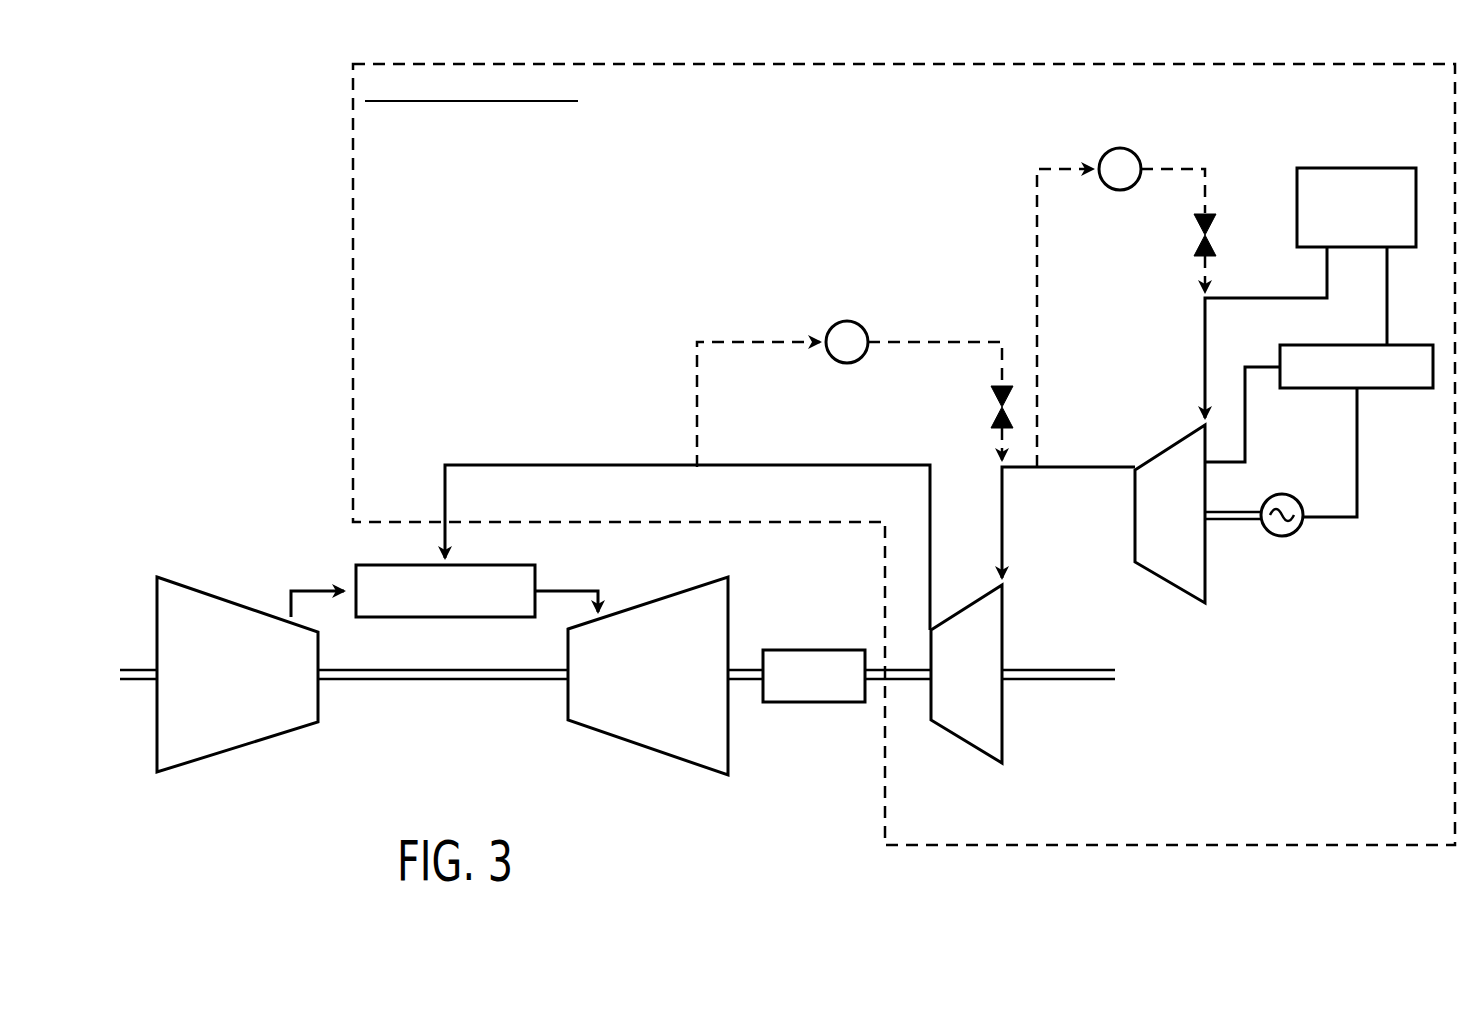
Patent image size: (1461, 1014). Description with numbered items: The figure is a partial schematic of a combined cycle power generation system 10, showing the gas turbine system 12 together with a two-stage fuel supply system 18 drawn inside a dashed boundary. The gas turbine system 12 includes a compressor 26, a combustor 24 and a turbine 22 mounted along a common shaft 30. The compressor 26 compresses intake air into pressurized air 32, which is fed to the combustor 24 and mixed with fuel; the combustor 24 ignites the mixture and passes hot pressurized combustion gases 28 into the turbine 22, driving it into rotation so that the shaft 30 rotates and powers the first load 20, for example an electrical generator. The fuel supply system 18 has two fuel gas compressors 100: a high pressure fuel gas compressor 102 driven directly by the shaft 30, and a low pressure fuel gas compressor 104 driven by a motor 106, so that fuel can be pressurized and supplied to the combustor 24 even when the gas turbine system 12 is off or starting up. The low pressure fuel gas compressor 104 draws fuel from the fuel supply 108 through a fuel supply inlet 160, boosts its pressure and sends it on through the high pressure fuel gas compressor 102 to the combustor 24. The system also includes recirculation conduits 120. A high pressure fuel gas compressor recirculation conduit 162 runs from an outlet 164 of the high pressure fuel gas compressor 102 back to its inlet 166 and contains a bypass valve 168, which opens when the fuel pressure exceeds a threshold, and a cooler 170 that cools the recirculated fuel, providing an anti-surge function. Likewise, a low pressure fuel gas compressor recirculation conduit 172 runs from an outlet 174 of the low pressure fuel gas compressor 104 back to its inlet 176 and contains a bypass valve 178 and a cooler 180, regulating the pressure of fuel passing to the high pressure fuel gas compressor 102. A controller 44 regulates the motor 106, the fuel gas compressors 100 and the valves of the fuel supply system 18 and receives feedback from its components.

The combined cycle power generation system 10 is at (214, 332).
The gas turbine system 12 is at (244, 458).
The fuel supply system 18 is at (353, 293).
The first load 20 is at (818, 650).
The turbine 22 is at (648, 748).
The combustor 24 is at (480, 564).
The compressor 26 is at (235, 750).
The combustion gases 28 is at (565, 590).
The shaft 30 is at (445, 681).
The pressurized air 32 is at (312, 585).
The controller 44 is at (1375, 388).
The fuel gas compressors 100 is at (1024, 743).
The high pressure fuel gas compressor 102 is at (973, 750).
The low pressure fuel gas compressor 104 is at (1163, 587).
The motor 106 is at (1282, 537).
The fuel supply 108 is at (1378, 168).
The recirculation conduits 120 is at (1026, 200).
The fuel supply inlet 160 is at (1268, 299).
The high pressure fuel gas compressor recirculation conduit 162 is at (958, 342).
The outlet 164 is at (814, 436).
The inlet 166 is at (1014, 520).
The bypass valve 168 is at (992, 399).
The cooler 170 is at (847, 321).
The low pressure fuel gas compressor recirculation conduit 172 is at (1163, 169).
The outlet 174 is at (1068, 446).
The inlet 176 is at (1186, 358).
The bypass valve 178 is at (1198, 222).
The cooler 180 is at (1120, 148).